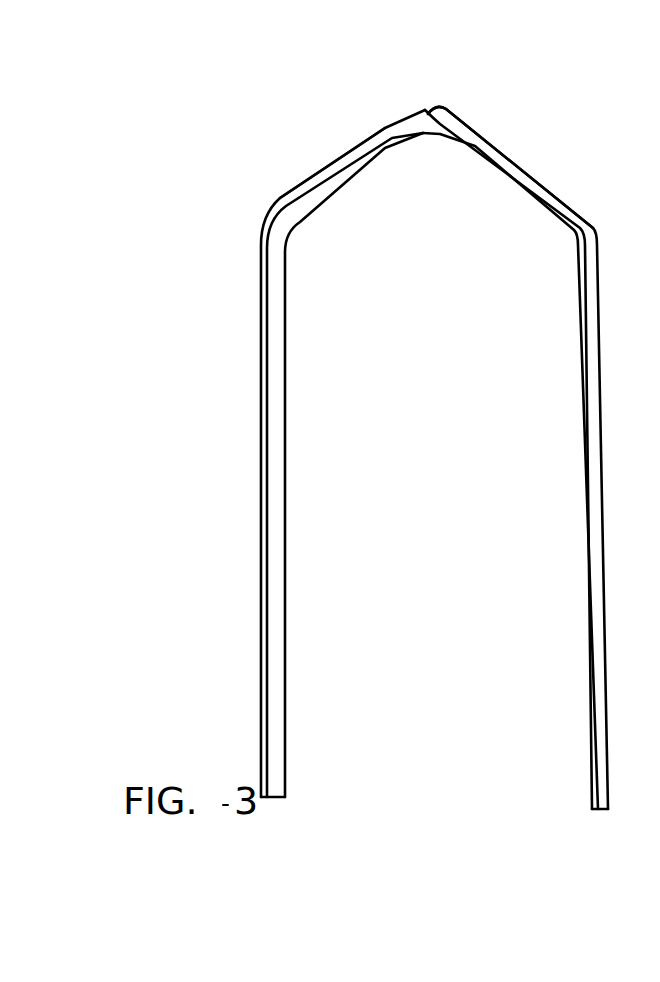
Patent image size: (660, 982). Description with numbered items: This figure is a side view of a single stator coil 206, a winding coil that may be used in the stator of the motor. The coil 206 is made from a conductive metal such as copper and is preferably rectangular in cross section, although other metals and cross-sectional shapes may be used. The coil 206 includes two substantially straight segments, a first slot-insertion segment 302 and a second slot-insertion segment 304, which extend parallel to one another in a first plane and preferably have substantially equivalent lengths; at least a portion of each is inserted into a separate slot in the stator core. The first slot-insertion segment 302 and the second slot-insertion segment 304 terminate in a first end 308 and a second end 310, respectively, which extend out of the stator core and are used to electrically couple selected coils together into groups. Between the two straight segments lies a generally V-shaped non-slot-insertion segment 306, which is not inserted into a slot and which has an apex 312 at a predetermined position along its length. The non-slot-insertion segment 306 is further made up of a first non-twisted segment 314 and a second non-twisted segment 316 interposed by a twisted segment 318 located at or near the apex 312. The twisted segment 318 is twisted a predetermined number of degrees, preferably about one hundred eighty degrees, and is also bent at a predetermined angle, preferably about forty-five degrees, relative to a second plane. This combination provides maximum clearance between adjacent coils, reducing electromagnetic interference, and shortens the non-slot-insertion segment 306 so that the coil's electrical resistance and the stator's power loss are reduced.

The stator coil 206 is at (213, 118).
The first slot-insertion segment 302 is at (273, 515).
The second slot-insertion segment 304 is at (590, 524).
The non-slot-insertion segment 306 is at (255, 103).
The first end 308 is at (282, 798).
The second end 310 is at (590, 809).
The apex 312 is at (438, 108).
The first non-twisted segment 314 is at (318, 170).
The second non-twisted segment 316 is at (531, 179).
The twisted segment 318 is at (476, 186).